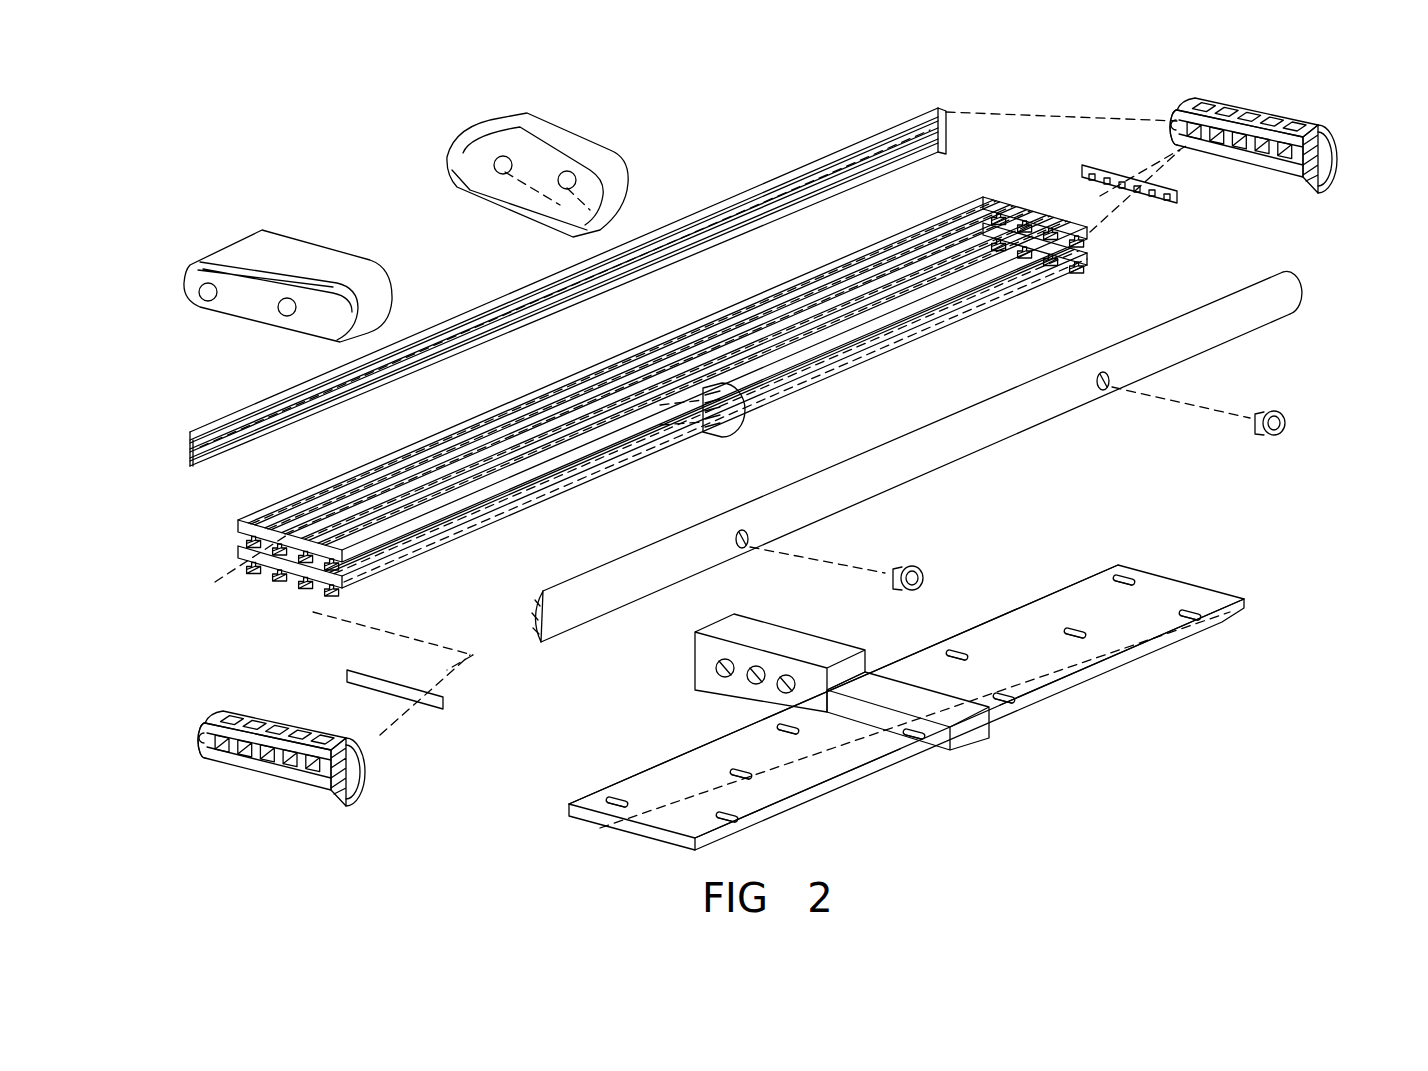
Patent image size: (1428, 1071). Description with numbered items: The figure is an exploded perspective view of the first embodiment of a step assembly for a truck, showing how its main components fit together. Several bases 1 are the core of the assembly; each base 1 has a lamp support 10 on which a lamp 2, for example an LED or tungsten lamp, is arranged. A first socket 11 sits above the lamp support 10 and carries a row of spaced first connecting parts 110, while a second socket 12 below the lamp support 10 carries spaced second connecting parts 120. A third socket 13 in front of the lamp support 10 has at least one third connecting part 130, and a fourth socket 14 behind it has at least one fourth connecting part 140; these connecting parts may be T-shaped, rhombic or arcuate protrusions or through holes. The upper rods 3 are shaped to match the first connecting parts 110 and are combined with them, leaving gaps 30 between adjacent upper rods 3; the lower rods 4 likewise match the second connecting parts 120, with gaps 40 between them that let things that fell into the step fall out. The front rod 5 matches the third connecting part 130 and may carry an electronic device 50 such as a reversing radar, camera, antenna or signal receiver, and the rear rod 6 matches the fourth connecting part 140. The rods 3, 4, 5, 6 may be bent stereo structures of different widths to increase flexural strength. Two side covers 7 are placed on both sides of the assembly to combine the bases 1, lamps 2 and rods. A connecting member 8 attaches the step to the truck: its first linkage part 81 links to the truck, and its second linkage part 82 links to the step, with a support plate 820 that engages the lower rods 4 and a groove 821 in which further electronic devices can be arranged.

The base 1 is at (769, 453).
The lamp 2 is at (1082, 173).
The upper rod 3 is at (609, 383).
The lower rod 4 is at (713, 443).
The front rod 5 is at (957, 450).
The rear rod 6 is at (449, 318).
The side cover 7 is at (238, 247).
The connecting member 8 is at (906, 707).
The lamp support 10 is at (739, 471).
The first socket 11 is at (756, 397).
The second socket 12 is at (755, 497).
The third socket 13 is at (879, 482).
The fourth socket 14 is at (651, 414).
The gap 30 is at (388, 467).
The gap 40 is at (327, 596).
The electronic device 50 is at (925, 580).
The first linkage part 81 is at (695, 650).
The second linkage part 82 is at (1043, 698).
The first connecting part 110 is at (764, 397).
The second connecting part 120 is at (753, 487).
The third connecting part 130 is at (850, 493).
The fourth connecting part 140 is at (651, 456).
The support plate 820 is at (842, 752).
The groove 821 is at (964, 723).